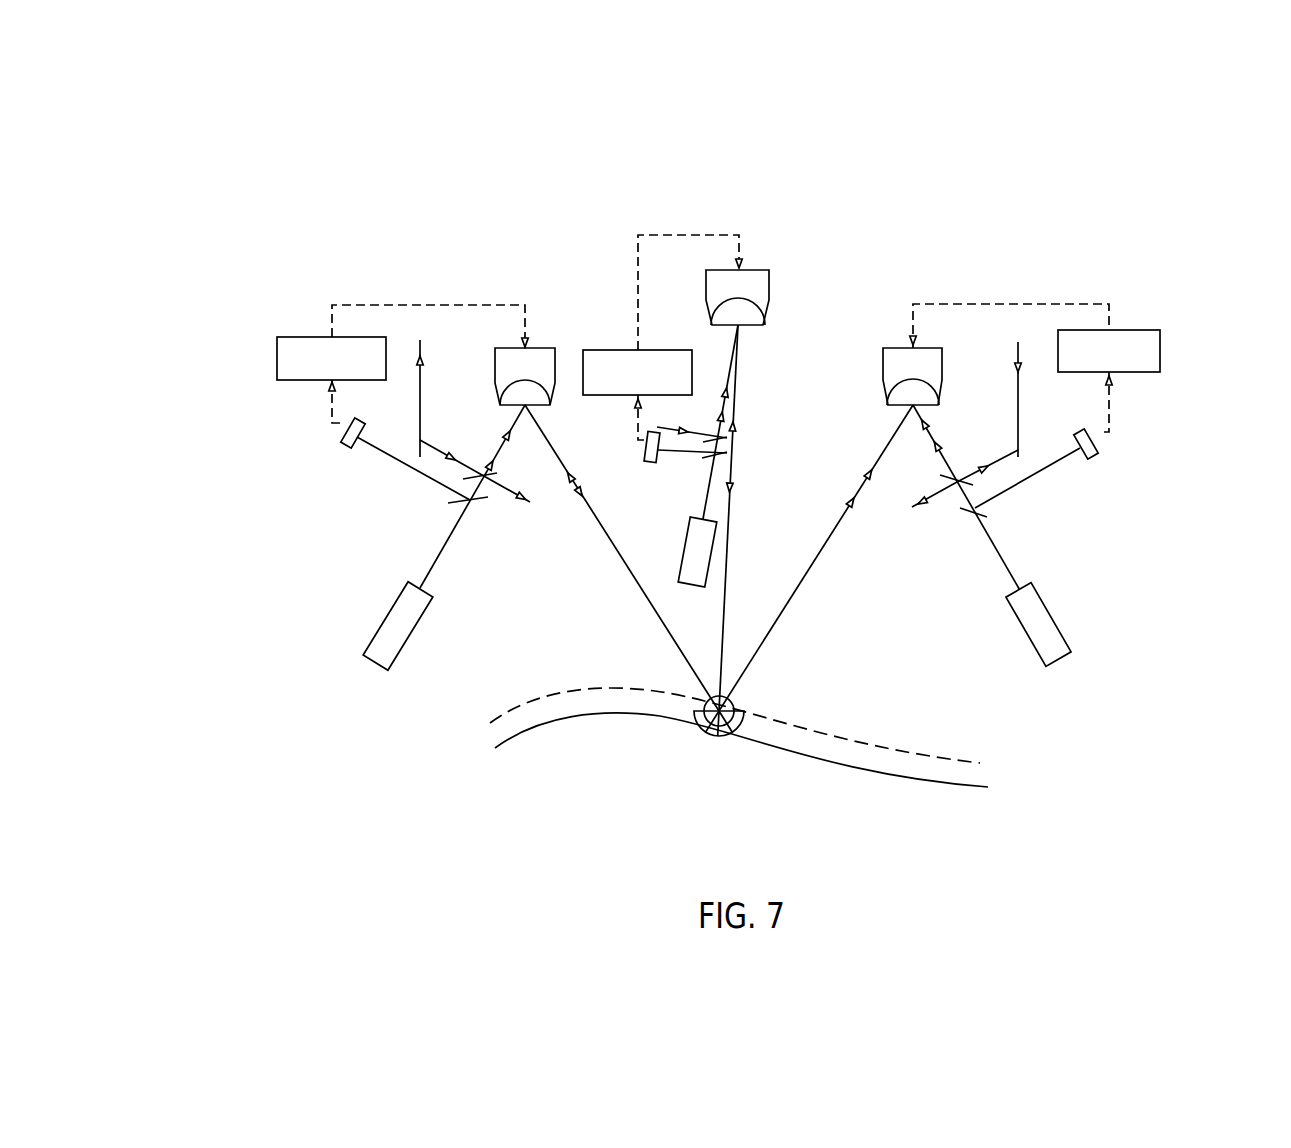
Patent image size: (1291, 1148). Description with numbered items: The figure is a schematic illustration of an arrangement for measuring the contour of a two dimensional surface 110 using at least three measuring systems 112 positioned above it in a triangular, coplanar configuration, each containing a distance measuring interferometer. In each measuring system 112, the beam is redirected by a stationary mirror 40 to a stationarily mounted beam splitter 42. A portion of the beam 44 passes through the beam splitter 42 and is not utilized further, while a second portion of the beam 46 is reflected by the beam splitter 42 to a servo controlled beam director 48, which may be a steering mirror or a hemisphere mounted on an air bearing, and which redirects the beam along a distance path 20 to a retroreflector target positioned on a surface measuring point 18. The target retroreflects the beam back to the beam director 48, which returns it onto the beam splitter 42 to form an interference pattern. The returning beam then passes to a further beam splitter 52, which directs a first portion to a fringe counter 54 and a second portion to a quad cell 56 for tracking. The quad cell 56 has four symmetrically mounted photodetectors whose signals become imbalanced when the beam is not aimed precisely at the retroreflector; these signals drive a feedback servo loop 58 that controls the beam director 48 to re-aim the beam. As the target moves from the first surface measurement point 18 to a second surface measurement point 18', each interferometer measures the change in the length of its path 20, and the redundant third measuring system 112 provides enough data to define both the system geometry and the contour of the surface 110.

The surface measuring point 18 is at (719, 741).
The second surface measurement point 18' is at (792, 729).
The distance path 20 is at (812, 570).
The second stationary mirror 40 is at (418, 433).
The beam splitter 42 is at (490, 475).
The portion of the beam 44 is at (940, 493).
The second portion of the beam 46 is at (943, 452).
The beam director 48 is at (545, 348).
The further beam splitter 52 is at (488, 503).
The fringe counter 54 is at (393, 660).
The quad cell 56 is at (350, 441).
The feedback servo loop 58 is at (277, 350).
The measured two dimensional surface 110 is at (838, 775).
The measuring systems 112 is at (418, 481).